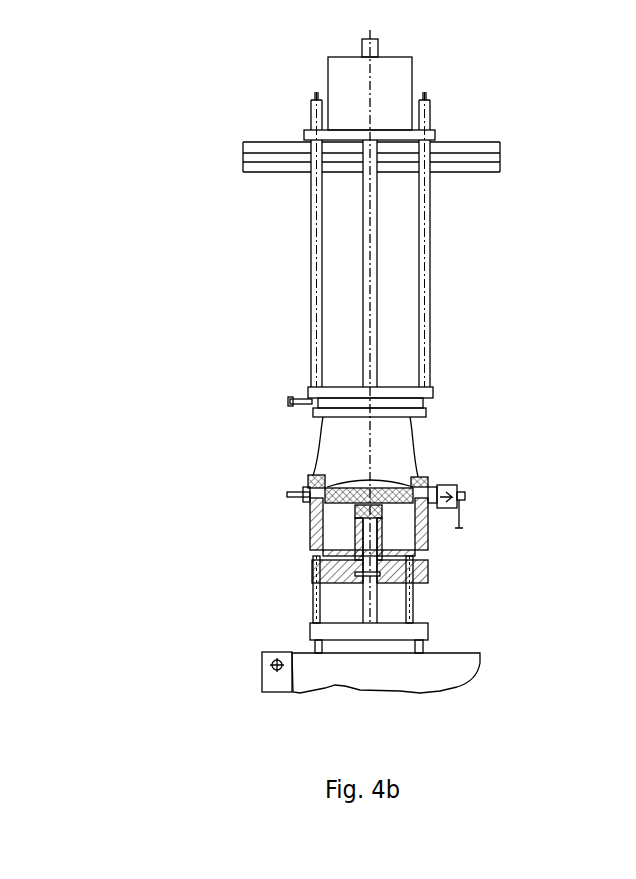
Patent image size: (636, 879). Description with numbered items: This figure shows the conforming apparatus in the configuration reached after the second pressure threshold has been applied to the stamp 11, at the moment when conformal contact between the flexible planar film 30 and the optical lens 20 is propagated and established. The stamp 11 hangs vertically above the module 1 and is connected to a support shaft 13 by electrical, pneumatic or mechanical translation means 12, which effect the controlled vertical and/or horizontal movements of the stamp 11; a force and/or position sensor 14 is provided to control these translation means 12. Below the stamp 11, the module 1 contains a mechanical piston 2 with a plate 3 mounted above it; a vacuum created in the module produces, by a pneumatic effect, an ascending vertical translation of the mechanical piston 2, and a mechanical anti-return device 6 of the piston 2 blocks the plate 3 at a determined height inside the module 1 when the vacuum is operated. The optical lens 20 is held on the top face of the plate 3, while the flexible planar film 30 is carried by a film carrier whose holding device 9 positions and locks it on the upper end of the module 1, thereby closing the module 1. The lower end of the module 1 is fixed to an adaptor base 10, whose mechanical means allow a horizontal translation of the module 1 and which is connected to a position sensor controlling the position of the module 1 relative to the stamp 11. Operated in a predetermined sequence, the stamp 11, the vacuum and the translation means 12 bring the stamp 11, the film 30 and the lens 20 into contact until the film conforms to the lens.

The module 1 is at (493, 470).
The mechanical piston 2 is at (363, 607).
The plate 3 is at (355, 519).
The mechanical anti-return device 6 is at (353, 573).
The holding device 9 is at (287, 497).
The adaptor base 10 is at (310, 631).
The stamp 11 is at (343, 445).
The translation means 12 is at (345, 83).
The support shaft 13 is at (420, 271).
The position sensor 14 is at (333, 400).
The optical lens 20 is at (353, 488).
The flexible planar film 30 is at (355, 479).